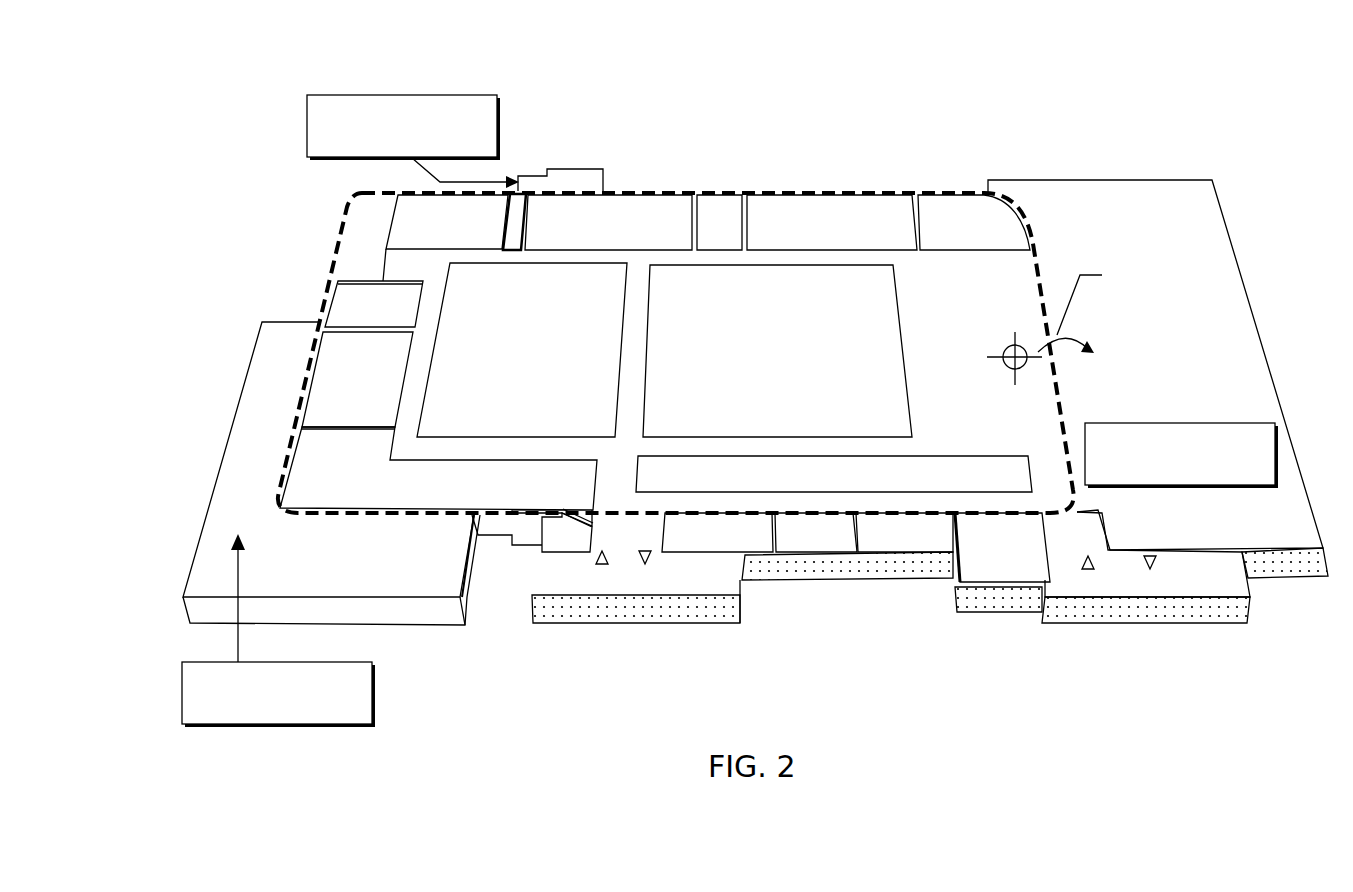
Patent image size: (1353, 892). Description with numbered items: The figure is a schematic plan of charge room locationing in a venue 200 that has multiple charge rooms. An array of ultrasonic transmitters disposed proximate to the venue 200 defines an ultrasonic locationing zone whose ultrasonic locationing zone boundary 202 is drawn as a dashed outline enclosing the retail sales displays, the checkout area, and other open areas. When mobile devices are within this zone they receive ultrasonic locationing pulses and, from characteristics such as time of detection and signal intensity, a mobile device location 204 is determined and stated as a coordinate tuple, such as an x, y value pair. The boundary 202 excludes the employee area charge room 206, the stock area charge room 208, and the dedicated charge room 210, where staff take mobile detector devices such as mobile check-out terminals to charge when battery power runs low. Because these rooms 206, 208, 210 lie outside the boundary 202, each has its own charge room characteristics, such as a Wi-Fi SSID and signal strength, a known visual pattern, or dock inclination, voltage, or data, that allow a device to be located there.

The venue 200 is at (216, 89).
The ultrasonic locationing zone boundary 202 is at (754, 304).
The mobile device location 204 is at (992, 352).
The employee area charge room 206 is at (331, 524).
The stock area charge room 208 is at (1158, 379).
The dedicated charge room 210 is at (551, 143).